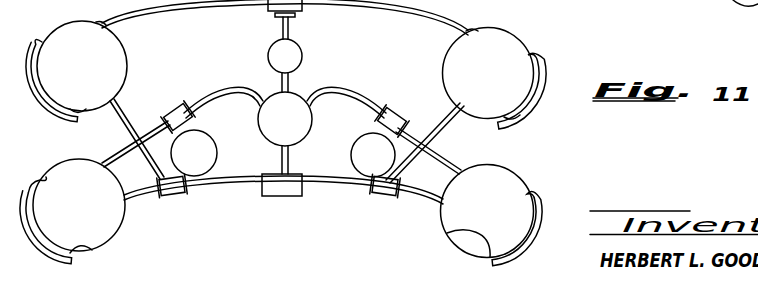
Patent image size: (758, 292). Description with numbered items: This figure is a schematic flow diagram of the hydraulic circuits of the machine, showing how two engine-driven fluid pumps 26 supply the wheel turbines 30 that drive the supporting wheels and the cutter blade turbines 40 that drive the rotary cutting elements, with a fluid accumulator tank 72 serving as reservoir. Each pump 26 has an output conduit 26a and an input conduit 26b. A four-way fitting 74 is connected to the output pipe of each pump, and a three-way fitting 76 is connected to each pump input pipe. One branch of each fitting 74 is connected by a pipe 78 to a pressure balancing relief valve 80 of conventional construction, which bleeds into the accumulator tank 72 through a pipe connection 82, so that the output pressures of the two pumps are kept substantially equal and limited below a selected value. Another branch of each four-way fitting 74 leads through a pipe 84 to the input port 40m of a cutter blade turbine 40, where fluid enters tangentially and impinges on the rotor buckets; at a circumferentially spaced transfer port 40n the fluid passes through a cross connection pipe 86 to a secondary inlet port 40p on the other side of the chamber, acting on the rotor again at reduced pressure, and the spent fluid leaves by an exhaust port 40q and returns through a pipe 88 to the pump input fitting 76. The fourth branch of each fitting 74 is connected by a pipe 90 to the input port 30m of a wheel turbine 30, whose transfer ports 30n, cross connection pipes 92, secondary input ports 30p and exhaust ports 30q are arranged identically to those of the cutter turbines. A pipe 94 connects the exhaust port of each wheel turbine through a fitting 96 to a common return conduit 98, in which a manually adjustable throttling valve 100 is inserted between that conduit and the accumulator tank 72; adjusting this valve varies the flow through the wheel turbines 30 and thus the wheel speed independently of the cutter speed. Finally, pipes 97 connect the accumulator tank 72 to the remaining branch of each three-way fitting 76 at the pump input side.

The fluid pump 26 is at (228, 122).
The output conduit 26a is at (178, 178).
The input conduit 26b is at (200, 100).
The wheel turbine 30 is at (315, 67).
The input port 30m is at (126, 66).
The transfer port 30n is at (75, 114).
The secondary input port 30p is at (37, 50).
The exhaust port 30q is at (97, 22).
The cutter blade turbine 40 is at (311, 209).
The input port 40m is at (465, 201).
The transfer port 40n is at (86, 252).
The secondary inlet port 40p is at (46, 176).
The exhaust port 40q is at (50, 168).
The accumulator tank 72 is at (288, 104).
The four-way fitting 74 is at (176, 197).
The three-way fitting 76 is at (177, 106).
The pipe 78 is at (224, 186).
The pressure balancing relief valve 80 is at (275, 186).
The pipe connection 82 is at (290, 160).
The pipe 84 is at (152, 196).
The cross connection pipe 86 is at (37, 240).
The pipe 88 is at (148, 136).
The pipe 90 is at (150, 160).
The cross connection pipe 92 is at (36, 93).
The pipe 94 is at (207, 7).
The fitting 96 is at (299, 8).
The pipe 97 is at (237, 88).
The common return conduit 98 is at (283, 22).
The throttling valve 100 is at (297, 52).